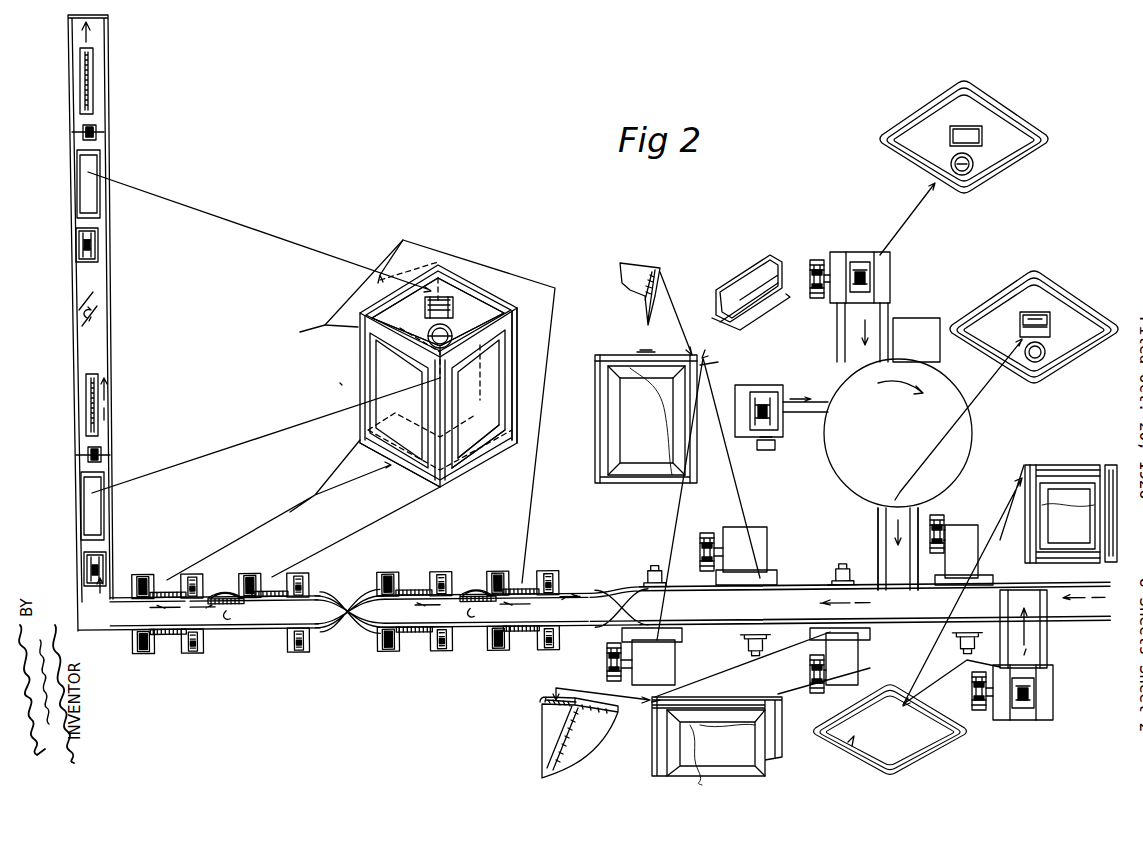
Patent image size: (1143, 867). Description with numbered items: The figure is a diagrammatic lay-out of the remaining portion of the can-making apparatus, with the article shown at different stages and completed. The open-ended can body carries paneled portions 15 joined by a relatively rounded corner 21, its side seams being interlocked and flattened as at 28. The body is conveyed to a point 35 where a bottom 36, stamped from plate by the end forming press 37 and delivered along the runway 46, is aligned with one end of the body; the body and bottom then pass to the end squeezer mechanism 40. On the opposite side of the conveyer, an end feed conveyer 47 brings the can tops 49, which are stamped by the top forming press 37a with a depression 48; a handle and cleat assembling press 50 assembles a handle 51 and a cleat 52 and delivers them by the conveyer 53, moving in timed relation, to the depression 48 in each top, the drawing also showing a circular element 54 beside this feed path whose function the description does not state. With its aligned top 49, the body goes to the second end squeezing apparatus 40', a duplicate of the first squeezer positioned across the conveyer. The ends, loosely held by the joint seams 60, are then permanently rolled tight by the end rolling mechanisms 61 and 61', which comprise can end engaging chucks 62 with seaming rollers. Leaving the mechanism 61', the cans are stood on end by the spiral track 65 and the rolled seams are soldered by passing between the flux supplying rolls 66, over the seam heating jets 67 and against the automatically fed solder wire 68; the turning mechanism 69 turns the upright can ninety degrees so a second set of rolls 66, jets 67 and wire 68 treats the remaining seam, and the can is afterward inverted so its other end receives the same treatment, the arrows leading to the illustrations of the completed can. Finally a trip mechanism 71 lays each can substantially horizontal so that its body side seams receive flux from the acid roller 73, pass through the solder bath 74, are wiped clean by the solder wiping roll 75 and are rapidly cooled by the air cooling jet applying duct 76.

The paneled portion 15 is at (556, 479).
The rounded corner 21 is at (520, 336).
The flattened interlocking seam portions 28 is at (380, 455).
The bottom aligning point 35 is at (1018, 590).
The bottom 36 is at (490, 470).
The end forming press 37 is at (1040, 688).
The can top forming press 37a is at (880, 270).
The end squeezer mechanism 40 is at (1023, 525).
The second end squeezing apparatus 40' is at (857, 660).
The runway 46 is at (1040, 643).
The end feed conveyer 47 is at (887, 547).
The depression 48 is at (970, 138).
The can top 49 is at (467, 298).
The handle and cleat assembling press 50 is at (772, 390).
The handle 51 is at (442, 293).
The cleat 52 is at (768, 306).
The conveyer 53 is at (808, 415).
The turntable 54 is at (845, 453).
The joint seam 60 is at (538, 710).
The end rolling mechanism 61 is at (740, 537).
The end rolling mechanism 61' is at (662, 656).
The can end engaging chuck 62 is at (663, 292).
The spiral track 65 is at (592, 597).
The flux supplying rolls 66 is at (192, 654).
The seam heating jets 67 is at (420, 636).
The solder wire 68 is at (144, 655).
The turning mechanism 69 is at (335, 620).
The trip mechanism 71 is at (96, 590).
The acid roller 73 is at (82, 242).
The solder bath 74 is at (88, 172).
The solder wiping roll 75 is at (95, 131).
The air cooling jet applying duct 76 is at (88, 92).